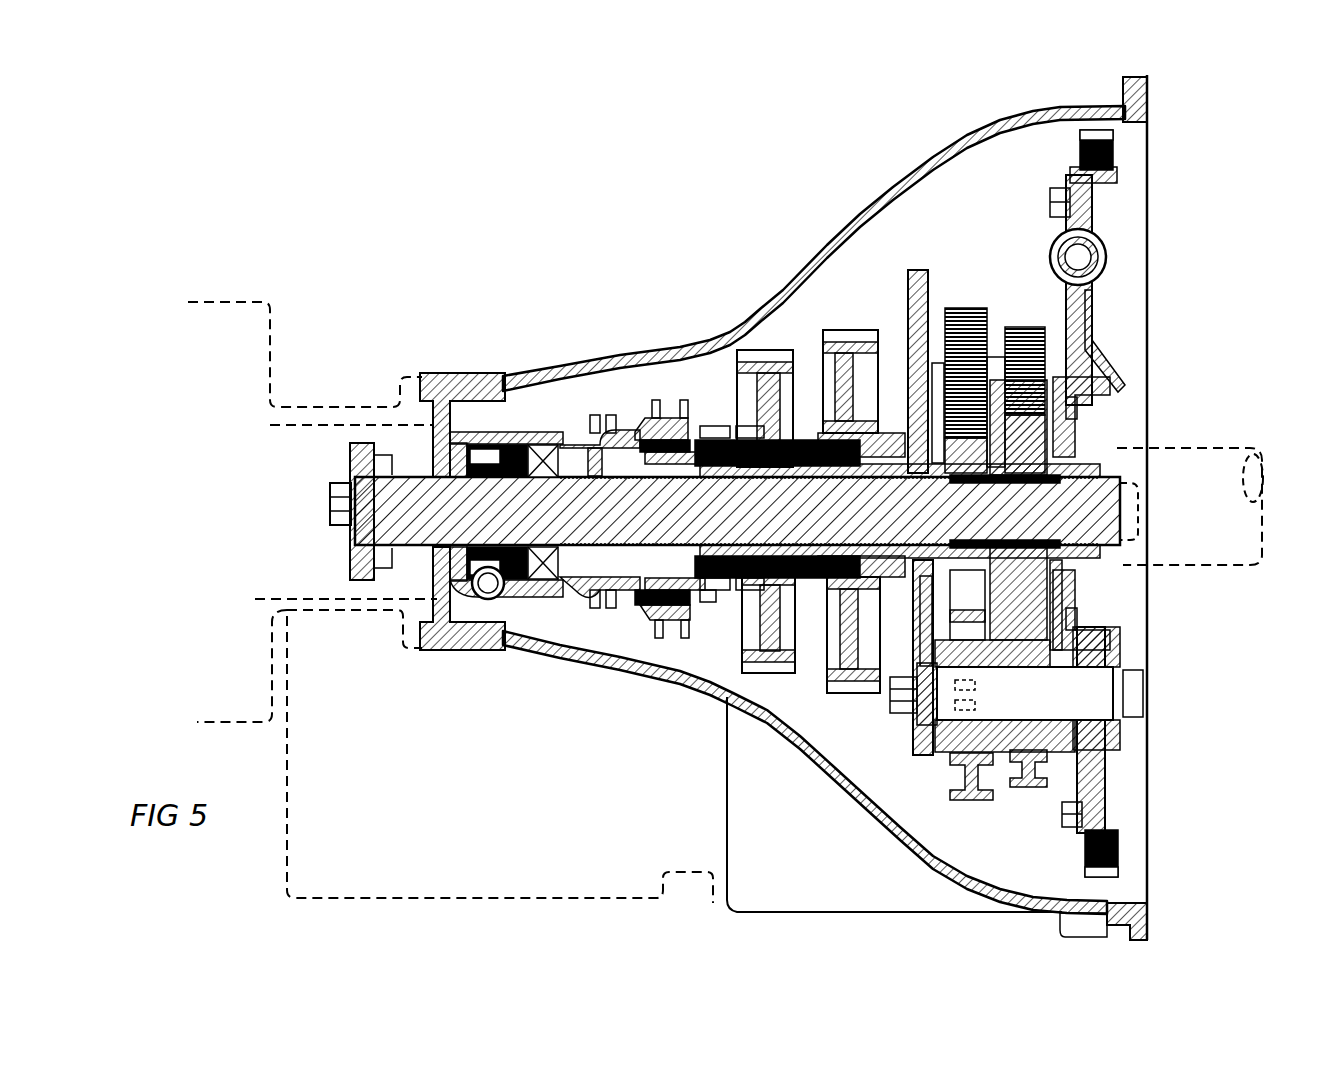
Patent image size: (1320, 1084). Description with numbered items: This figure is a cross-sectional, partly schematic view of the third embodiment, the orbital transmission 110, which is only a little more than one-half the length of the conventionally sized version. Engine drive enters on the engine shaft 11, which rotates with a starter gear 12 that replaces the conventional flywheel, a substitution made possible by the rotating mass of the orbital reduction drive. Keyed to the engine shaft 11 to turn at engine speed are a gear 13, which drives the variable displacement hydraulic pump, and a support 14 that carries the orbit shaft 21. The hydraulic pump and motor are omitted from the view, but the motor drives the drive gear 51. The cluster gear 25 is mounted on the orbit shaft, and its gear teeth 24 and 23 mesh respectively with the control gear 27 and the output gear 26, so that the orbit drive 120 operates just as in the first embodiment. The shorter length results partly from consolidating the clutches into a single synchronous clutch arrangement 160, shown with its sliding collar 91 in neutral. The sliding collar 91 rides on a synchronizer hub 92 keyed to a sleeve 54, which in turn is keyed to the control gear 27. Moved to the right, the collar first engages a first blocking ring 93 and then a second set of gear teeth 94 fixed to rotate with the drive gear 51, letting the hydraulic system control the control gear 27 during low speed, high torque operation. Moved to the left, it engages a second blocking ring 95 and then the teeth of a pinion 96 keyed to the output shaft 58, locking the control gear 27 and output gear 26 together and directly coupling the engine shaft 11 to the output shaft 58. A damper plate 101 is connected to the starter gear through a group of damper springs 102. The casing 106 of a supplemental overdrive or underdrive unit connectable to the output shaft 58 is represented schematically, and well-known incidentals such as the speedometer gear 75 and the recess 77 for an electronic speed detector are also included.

The engine shaft 11 is at (1175, 448).
The starter gear 12 is at (1145, 97).
The gear 13 is at (870, 342).
The support 14 is at (927, 280).
The orbit shaft 21 is at (1093, 680).
The gear teeth 23 is at (1007, 360).
The gear teeth 24 is at (945, 310).
The cluster gear 25 is at (992, 355).
The output gear 26 is at (1117, 573).
The control gear 27 is at (940, 357).
The drive gear 51 is at (760, 350).
The sleeve 54 is at (827, 457).
The output shaft 58 is at (370, 520).
The speedometer gear 75 is at (488, 600).
The recess 77 is at (480, 380).
The sliding collar 91 is at (655, 430).
The synchronizer hub 92 is at (640, 597).
The first blocking ring 93 is at (707, 593).
The gear teeth 94 is at (720, 560).
The second blocking ring 95 is at (616, 428).
The pinion 96 is at (603, 563).
The damper plate 101 is at (1108, 348).
The damper springs 102 is at (1105, 253).
The casing 106 is at (232, 302).
The orbital transmission 110 is at (746, 266).
The orbit drive 120 is at (1028, 212).
The synchronous clutch arrangement 160 is at (643, 412).